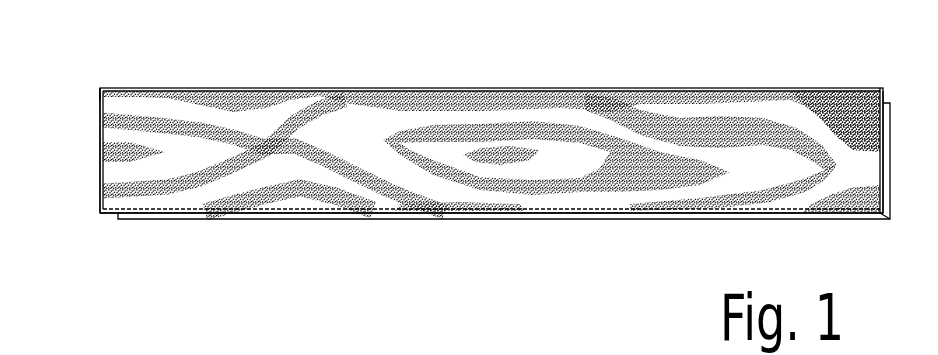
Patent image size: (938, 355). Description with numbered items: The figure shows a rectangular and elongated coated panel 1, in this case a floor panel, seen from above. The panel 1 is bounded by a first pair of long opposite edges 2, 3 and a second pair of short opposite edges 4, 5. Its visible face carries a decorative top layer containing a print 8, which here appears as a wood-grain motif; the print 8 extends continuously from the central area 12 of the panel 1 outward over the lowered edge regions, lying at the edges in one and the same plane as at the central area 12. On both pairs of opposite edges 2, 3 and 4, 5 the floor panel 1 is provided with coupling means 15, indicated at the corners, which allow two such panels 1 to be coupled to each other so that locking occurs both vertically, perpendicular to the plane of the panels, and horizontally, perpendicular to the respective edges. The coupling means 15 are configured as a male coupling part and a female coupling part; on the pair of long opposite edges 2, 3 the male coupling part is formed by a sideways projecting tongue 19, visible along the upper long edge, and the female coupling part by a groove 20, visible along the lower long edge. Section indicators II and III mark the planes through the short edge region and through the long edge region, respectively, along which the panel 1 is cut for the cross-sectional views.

The coated panel 1 is at (690, 88).
The long opposite edge 2 is at (557, 90).
The long opposite edge 3 is at (650, 215).
The short opposite edge 4 is at (101, 195).
The short opposite edge 5 is at (888, 198).
The print 8 is at (565, 133).
The central area 12 is at (412, 128).
The coupling means 15 is at (99, 86).
The sideways projecting tongue 19 is at (197, 88).
The groove 20 is at (100, 216).
The section line II is at (75, 97).
The section line III is at (486, 110).